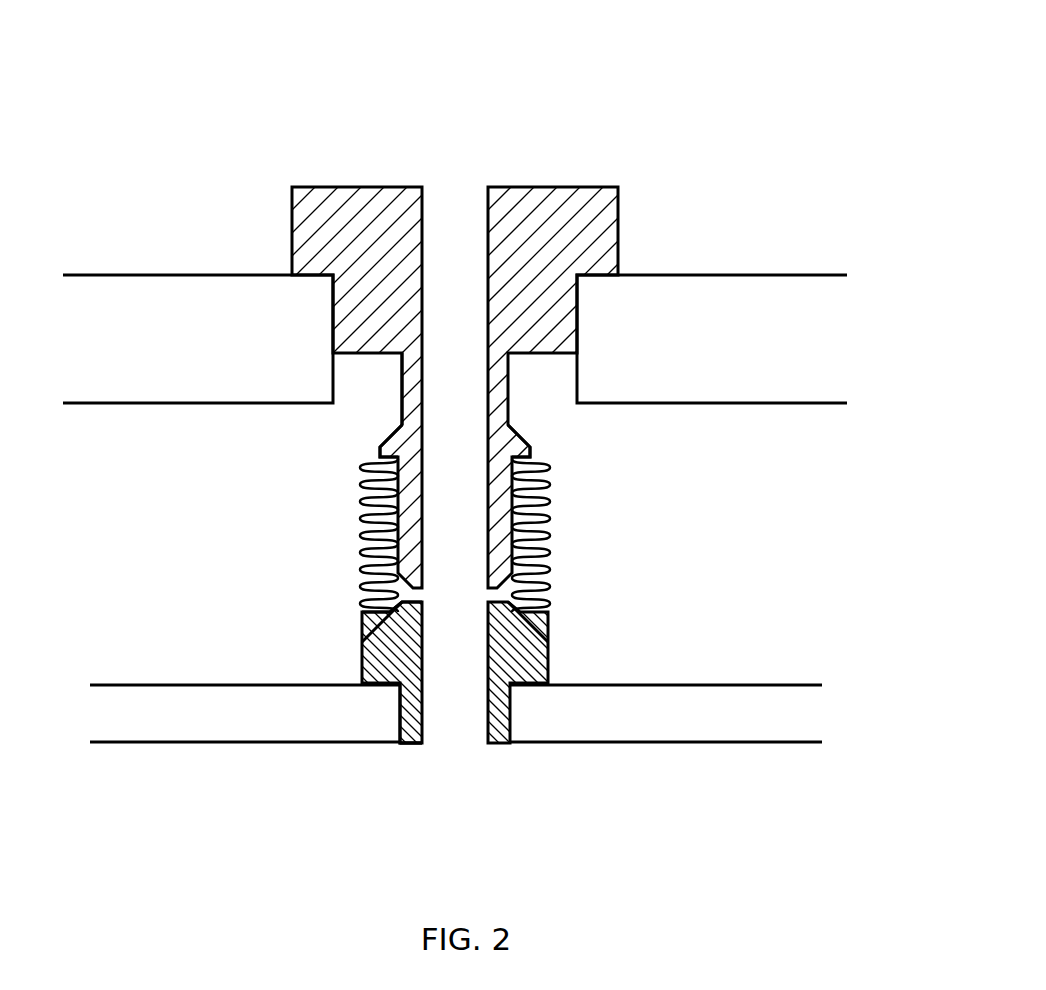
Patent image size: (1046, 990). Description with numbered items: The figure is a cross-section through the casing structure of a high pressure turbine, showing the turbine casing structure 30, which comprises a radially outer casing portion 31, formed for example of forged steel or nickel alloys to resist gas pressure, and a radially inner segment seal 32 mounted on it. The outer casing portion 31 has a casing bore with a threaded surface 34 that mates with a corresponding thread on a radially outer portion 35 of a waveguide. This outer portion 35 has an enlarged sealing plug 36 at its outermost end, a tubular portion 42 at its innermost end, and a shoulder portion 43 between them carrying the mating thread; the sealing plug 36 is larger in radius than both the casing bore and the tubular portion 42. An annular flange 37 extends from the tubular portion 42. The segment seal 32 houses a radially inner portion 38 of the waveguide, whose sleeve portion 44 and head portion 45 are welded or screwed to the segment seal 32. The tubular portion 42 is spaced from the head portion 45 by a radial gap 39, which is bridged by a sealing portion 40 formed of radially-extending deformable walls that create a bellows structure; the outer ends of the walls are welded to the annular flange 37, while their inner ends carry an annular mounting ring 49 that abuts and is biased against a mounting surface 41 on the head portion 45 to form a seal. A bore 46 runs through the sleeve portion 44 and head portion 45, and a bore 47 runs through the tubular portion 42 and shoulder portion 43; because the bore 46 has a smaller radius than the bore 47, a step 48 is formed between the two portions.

The turbine casing structure 30 is at (797, 82).
The radially outer casing portion 31 is at (732, 302).
The segment seal 32 is at (722, 713).
The threaded surface 34 is at (330, 325).
The radially outer portion 35 is at (607, 153).
The sealing plug 36 is at (342, 202).
The annular flange 37 is at (382, 455).
The radially inner portion 38 is at (568, 648).
The radial gap 39 is at (493, 595).
The sealing portion 40 is at (360, 537).
The mounting surface 41 is at (402, 647).
The tubular portion 42 is at (498, 483).
The shoulder portion 43 is at (368, 288).
The sleeve portion 44 is at (402, 740).
The head portion 45 is at (362, 663).
The bore 46 is at (457, 733).
The bore 47 is at (458, 190).
The step 48 is at (420, 602).
The annular mounting ring 49 is at (362, 627).